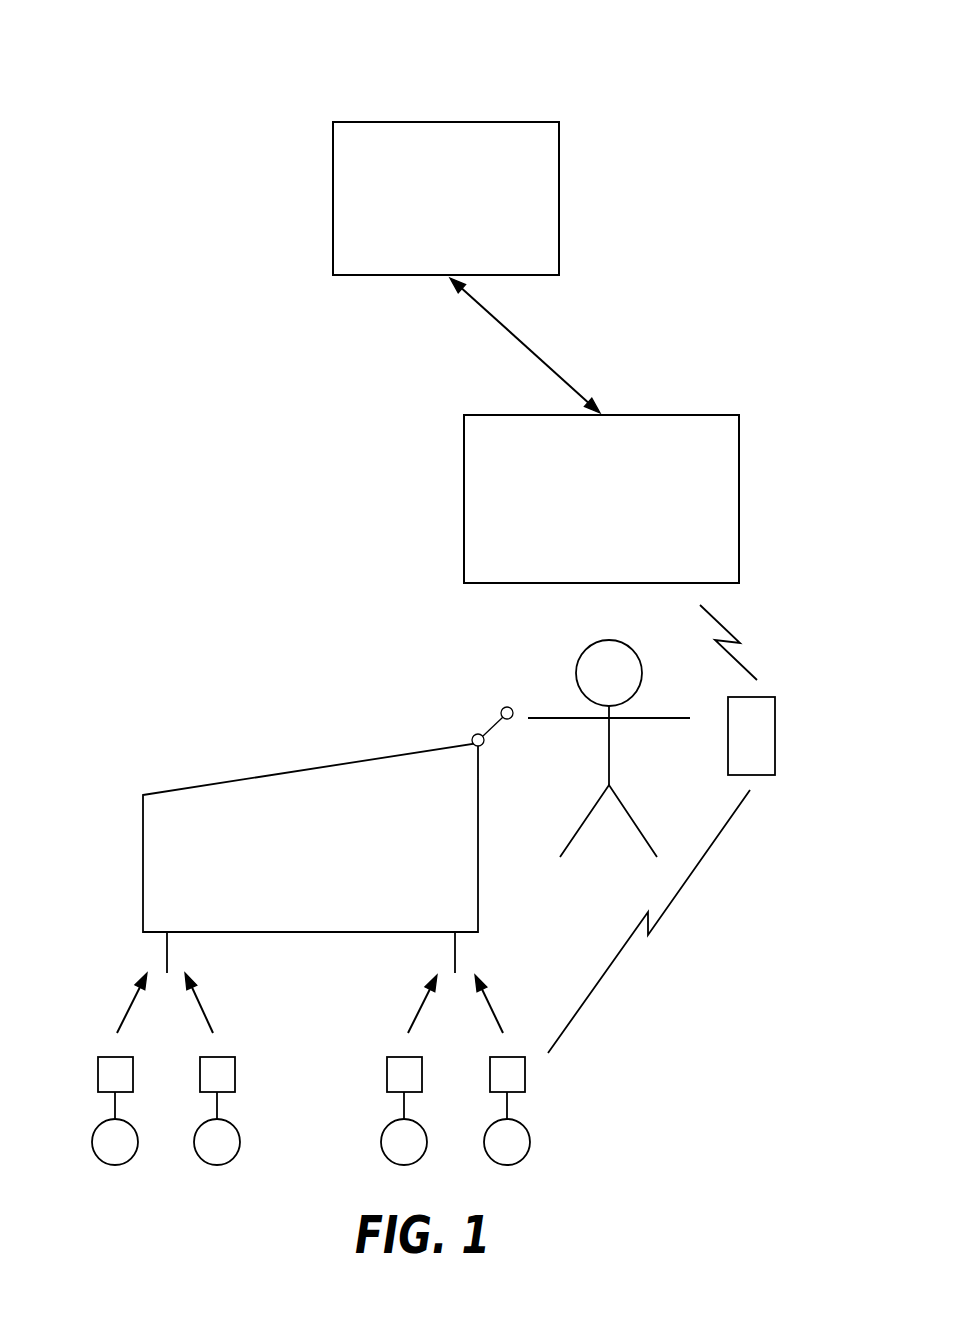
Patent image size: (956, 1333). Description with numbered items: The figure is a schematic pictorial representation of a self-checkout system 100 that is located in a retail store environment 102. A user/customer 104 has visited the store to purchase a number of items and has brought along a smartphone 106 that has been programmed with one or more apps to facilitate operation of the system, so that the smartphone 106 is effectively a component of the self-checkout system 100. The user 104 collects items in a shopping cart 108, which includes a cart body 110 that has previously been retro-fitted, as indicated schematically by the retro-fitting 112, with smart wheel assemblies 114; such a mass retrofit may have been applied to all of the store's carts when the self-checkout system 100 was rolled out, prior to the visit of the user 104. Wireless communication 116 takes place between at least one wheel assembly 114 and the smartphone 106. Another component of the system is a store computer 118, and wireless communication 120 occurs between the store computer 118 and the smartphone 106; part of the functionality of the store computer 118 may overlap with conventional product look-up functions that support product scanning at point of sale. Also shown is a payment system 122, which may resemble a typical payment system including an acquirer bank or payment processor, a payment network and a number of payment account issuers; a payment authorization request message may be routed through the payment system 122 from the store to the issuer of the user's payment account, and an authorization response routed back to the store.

The self-checkout system 100 is at (158, 50).
The retail store environment 102 is at (198, 273).
The user/customer 104 is at (610, 755).
The smartphone 106 is at (776, 724).
The shopping cart 108 is at (111, 682).
The cart body 110 is at (347, 762).
The retro-fitting 112 is at (93, 982).
The smart wheel assembly 114 is at (113, 1105).
The wireless communication 116 is at (600, 980).
The store computer 118 is at (694, 414).
The wireless communication 120 is at (740, 665).
The payment system 122 is at (516, 121).